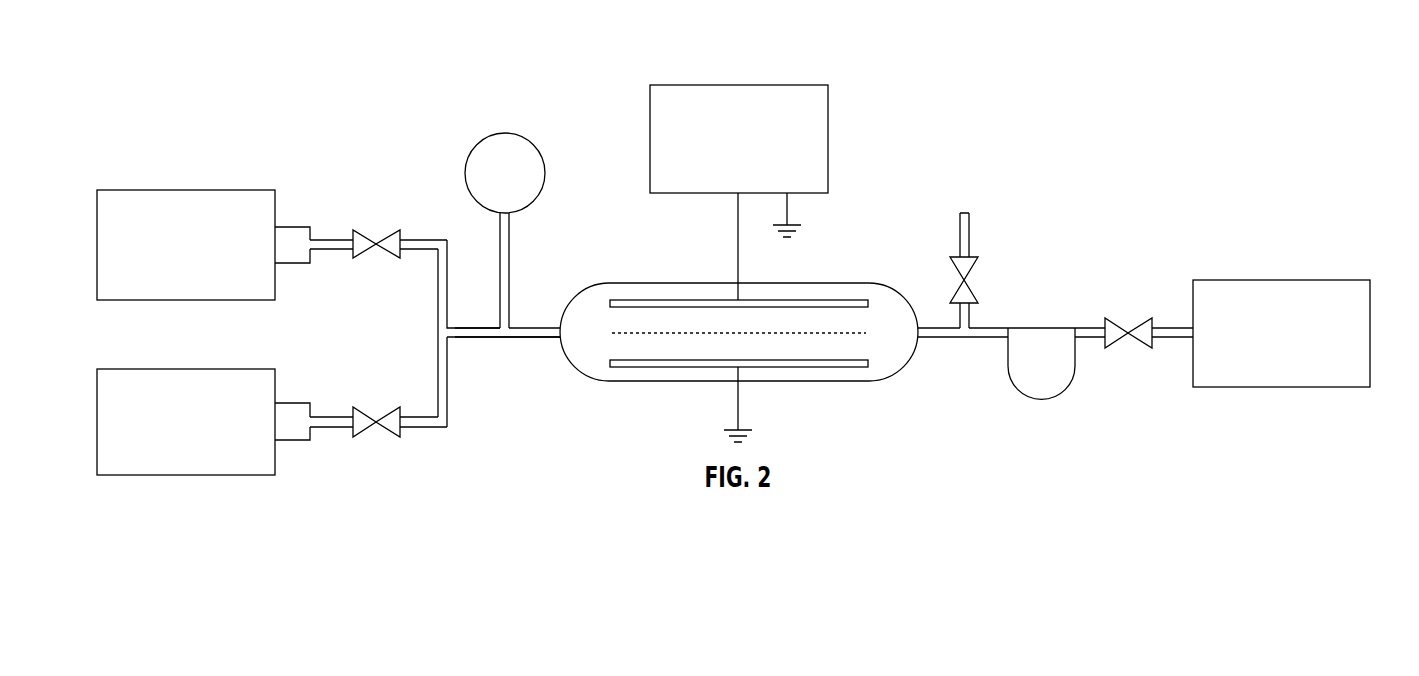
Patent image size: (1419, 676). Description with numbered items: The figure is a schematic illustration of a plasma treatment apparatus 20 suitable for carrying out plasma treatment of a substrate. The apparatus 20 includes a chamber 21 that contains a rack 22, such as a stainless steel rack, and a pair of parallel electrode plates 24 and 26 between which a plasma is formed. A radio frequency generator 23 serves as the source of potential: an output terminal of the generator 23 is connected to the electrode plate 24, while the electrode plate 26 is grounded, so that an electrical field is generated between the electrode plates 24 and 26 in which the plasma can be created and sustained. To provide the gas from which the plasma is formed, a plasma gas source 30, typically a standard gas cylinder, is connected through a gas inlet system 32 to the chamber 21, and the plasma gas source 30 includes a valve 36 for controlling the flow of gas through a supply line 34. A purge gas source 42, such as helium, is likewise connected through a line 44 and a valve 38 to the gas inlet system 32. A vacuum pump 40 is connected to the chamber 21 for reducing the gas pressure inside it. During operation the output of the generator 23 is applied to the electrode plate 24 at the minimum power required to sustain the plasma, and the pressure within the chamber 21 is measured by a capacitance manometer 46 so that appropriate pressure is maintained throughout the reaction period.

The plasma treatment apparatus 20 is at (352, 124).
The chamber 21 is at (686, 383).
The rack 22 is at (867, 336).
The radio frequency generator 23 is at (787, 85).
The electrode plate 24 is at (650, 299).
The electrode plate 26 is at (808, 368).
The plasma gas source 30 is at (137, 190).
The gas inlet system 32 is at (438, 333).
The supply line 34 is at (478, 340).
The valve 36 is at (388, 229).
The valve 38 is at (385, 438).
The vacuum pump 40 is at (1320, 280).
The purge gas source 42 is at (135, 368).
The line 44 is at (327, 416).
The capacitance manometer 46 is at (518, 136).